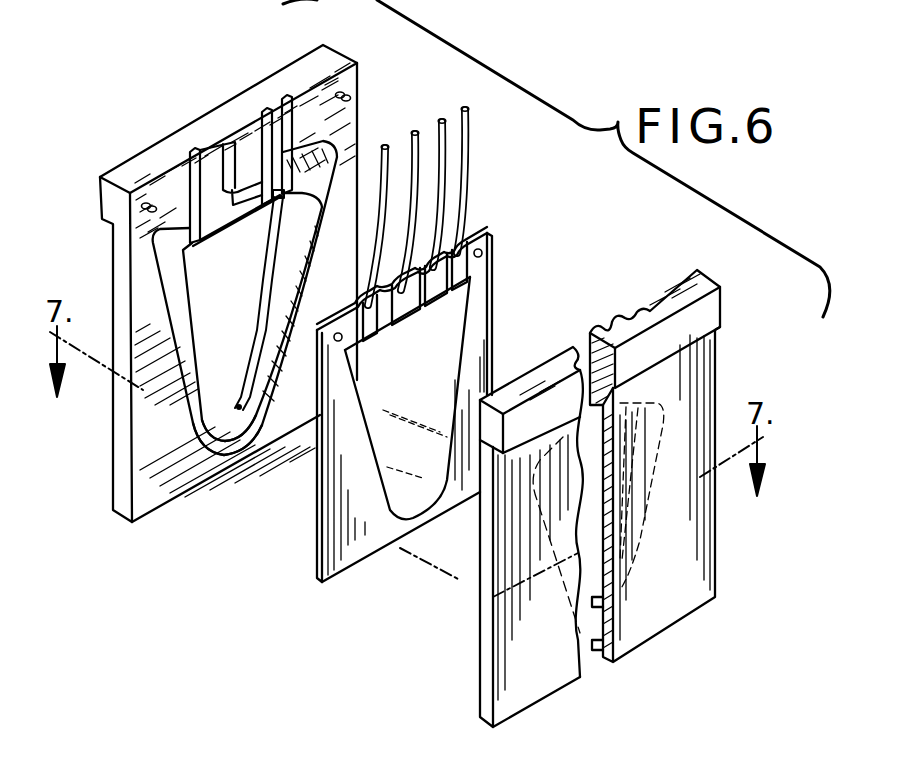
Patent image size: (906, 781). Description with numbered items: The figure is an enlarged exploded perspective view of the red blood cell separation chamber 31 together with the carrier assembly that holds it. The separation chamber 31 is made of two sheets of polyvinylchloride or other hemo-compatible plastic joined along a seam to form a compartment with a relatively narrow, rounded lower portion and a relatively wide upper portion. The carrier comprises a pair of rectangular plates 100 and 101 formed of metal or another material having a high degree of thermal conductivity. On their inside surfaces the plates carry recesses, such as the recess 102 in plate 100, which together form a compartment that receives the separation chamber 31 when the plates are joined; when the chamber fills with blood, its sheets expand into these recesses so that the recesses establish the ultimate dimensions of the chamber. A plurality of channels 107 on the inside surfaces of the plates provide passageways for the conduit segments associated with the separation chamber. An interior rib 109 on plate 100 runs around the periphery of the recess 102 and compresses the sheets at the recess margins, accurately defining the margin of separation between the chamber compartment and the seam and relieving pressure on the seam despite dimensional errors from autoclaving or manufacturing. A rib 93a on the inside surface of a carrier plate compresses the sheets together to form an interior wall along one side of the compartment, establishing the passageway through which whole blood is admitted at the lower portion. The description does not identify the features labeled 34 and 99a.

The rectangular plate 100 is at (178, 472).
The rectangular plate 101 is at (527, 693).
The recess 102 is at (240, 410).
The channels 107 is at (250, 130).
The interior rib 109 is at (290, 304).
The groove channel 99a is at (253, 367).
The rib 93a is at (272, 278).
The lead wires 34 is at (420, 203).
The red blood cell separation chamber 31 is at (343, 552).